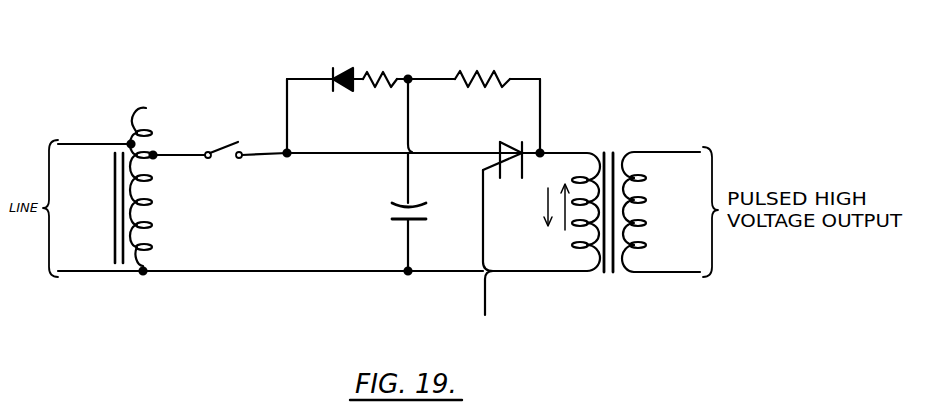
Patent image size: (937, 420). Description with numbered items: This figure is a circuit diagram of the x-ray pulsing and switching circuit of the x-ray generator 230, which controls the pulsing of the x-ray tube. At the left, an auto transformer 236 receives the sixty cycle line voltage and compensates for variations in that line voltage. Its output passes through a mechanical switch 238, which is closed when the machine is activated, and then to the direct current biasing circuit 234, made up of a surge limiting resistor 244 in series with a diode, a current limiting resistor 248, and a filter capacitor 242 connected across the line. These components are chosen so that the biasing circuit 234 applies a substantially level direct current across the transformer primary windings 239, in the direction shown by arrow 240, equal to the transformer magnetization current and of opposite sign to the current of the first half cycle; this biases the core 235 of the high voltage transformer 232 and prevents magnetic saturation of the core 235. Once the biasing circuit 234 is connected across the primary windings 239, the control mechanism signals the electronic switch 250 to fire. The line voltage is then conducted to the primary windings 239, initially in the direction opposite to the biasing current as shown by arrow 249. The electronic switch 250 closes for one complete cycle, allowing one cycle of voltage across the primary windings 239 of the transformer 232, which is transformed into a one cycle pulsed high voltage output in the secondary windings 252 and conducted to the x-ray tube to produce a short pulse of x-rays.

The x-ray generator 230 is at (580, 303).
The transformer 232 is at (664, 194).
The direct current biasing circuit 234 is at (535, 65).
The core 235 is at (613, 148).
The auto transformer 236 is at (159, 205).
The mechanical switch 238 is at (210, 150).
The transformer primary windings 239 is at (583, 250).
The arrow 240 is at (547, 205).
The filter capacitor 242 is at (393, 215).
The surge limiting resistor 244 is at (388, 72).
The current limiting resistor 248 is at (482, 67).
The arrow 249 is at (570, 227).
The electronic switch 250 is at (516, 130).
The secondary windings 252 is at (643, 223).